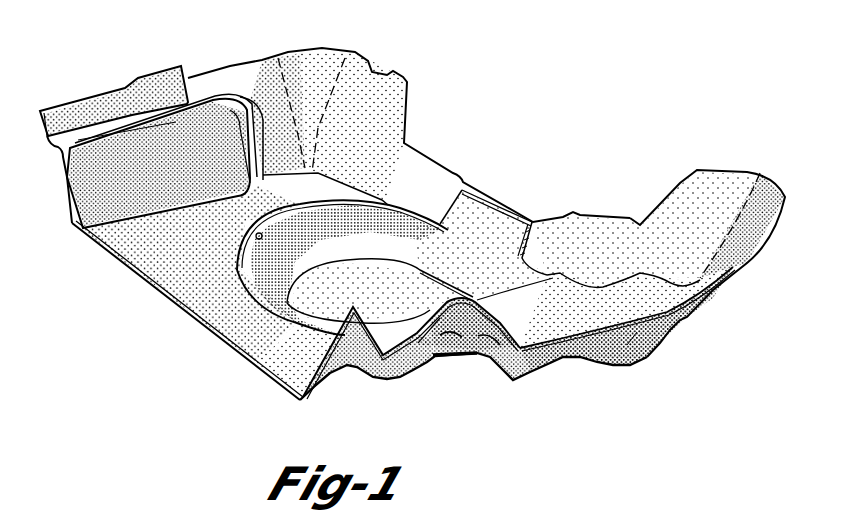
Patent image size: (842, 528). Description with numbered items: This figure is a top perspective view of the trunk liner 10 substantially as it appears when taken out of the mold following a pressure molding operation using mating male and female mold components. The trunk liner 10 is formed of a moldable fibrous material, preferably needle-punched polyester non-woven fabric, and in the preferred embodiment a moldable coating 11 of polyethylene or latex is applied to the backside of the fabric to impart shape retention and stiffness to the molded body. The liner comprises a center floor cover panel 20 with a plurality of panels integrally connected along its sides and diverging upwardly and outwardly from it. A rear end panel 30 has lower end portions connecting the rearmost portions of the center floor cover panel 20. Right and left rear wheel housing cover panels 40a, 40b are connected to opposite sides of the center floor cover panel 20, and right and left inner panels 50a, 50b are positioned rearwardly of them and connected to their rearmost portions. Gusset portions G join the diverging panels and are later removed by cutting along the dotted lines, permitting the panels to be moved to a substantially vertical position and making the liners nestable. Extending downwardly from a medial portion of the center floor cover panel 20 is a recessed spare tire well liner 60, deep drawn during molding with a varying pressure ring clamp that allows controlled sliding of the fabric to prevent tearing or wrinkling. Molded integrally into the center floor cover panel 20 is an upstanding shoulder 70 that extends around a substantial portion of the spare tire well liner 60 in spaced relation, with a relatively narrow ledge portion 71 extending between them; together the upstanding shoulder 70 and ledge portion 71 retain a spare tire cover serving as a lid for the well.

The trunk liner 10 is at (487, 98).
The moldable coating 11 is at (277, 393).
The center floor cover panel 20 is at (200, 303).
The rear end panel 30 is at (580, 222).
The right rear wheel housing cover panel 40a is at (97, 170).
The left rear wheel housing cover panel 40b is at (510, 379).
The right inner panel 50a is at (259, 72).
The left inner panel 50b is at (690, 310).
The recessed spare tire well liner 60 is at (420, 254).
The upstanding shoulder 70 is at (256, 230).
The relatively narrow ledge portion 71 is at (260, 303).
The gusset portions G is at (322, 58).